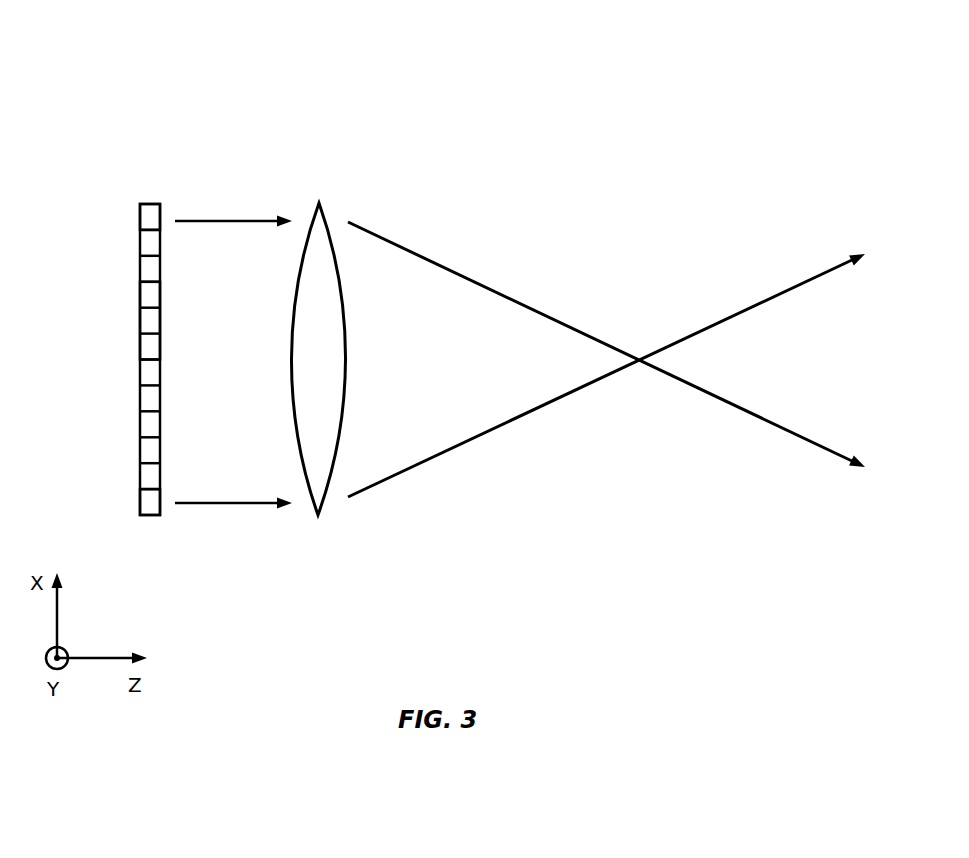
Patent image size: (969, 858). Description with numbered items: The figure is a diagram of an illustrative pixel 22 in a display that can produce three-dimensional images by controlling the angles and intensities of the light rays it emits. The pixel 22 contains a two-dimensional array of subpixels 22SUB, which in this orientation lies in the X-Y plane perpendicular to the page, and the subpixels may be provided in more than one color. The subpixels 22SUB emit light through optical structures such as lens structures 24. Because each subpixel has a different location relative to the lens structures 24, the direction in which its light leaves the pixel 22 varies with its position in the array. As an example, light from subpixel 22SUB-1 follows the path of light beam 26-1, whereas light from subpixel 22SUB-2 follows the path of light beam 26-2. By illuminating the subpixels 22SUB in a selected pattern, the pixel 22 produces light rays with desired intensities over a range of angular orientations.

The pixel 22 is at (103, 108).
The subpixels 22SUB is at (152, 302).
The subpixel 22SUB-1 is at (150, 217).
The subpixel 22SUB-2 is at (150, 500).
The lens structures 24 is at (317, 475).
The light beam 26-1 is at (558, 320).
The light beam 26-2 is at (757, 307).